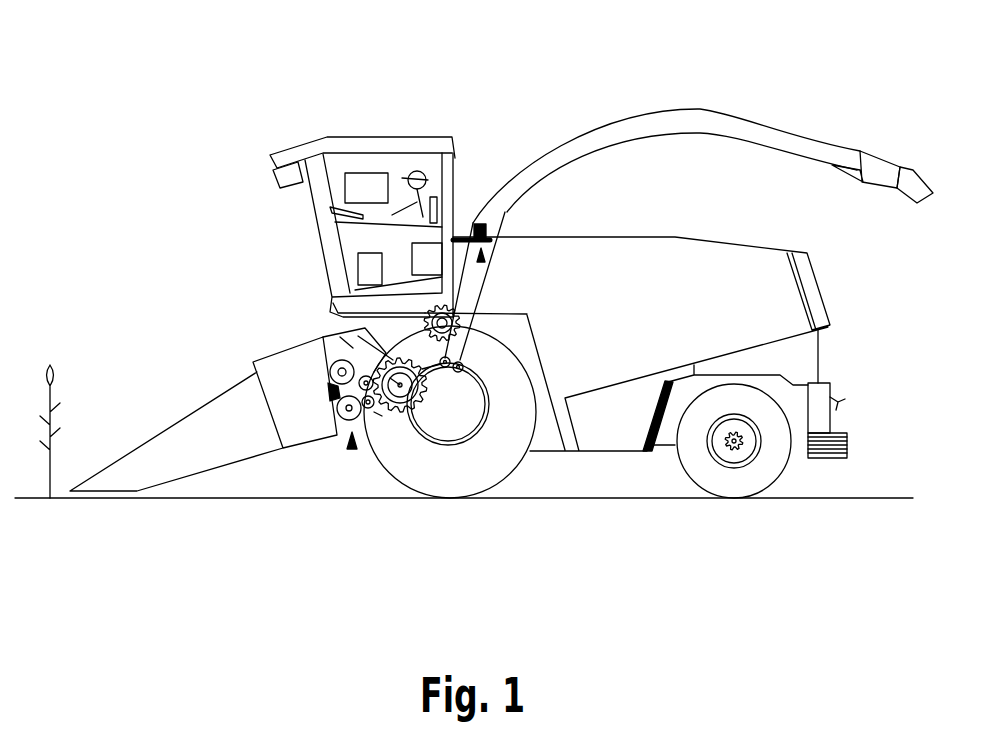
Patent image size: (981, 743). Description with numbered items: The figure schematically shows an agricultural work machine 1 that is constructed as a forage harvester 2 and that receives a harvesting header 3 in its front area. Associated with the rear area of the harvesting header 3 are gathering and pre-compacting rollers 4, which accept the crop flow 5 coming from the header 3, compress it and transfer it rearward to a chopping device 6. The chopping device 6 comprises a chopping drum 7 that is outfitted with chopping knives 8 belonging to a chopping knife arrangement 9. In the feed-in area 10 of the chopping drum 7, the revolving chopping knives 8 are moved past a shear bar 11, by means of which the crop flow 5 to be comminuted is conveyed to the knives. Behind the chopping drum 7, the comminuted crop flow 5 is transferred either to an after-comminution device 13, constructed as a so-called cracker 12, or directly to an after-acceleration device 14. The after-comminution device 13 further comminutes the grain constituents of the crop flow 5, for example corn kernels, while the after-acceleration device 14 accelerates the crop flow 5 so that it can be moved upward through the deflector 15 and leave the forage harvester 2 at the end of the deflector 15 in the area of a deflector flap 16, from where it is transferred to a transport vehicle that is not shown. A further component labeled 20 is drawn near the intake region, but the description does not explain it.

The agricultural work machine 1 is at (193, 113).
The forage harvester 2 is at (558, 317).
The harvesting header 3 is at (179, 457).
The gathering and pre-compacting rollers 4 is at (352, 447).
The crop flow 5 is at (477, 292).
The chopping device 6 is at (418, 402).
The chopping drum 7 is at (400, 385).
The chopping knives 8 is at (462, 400).
The chopping knife arrangement 9 is at (442, 364).
The feed-in area 10 is at (333, 380).
The shear bar 11 is at (376, 420).
The cracker 12 is at (492, 410).
The after-comminution device 13 is at (448, 404).
The after-acceleration device 14 is at (462, 324).
The deflector 15 is at (690, 118).
The deflector flap 16 is at (913, 175).
The intake housing 20 is at (333, 333).